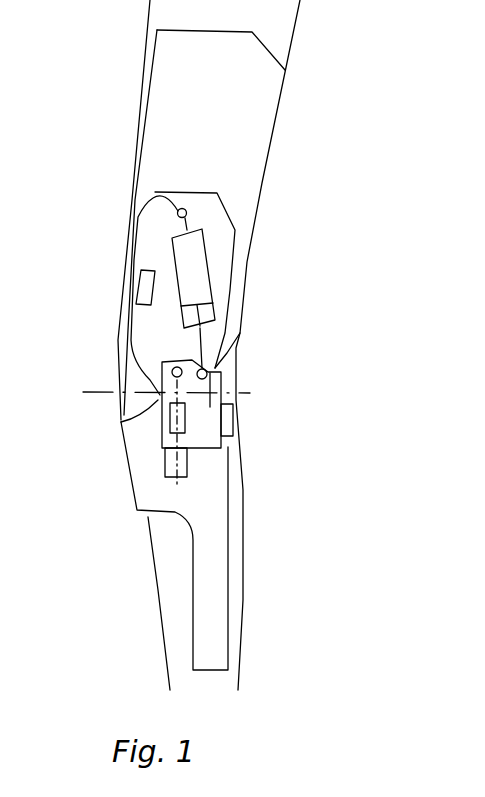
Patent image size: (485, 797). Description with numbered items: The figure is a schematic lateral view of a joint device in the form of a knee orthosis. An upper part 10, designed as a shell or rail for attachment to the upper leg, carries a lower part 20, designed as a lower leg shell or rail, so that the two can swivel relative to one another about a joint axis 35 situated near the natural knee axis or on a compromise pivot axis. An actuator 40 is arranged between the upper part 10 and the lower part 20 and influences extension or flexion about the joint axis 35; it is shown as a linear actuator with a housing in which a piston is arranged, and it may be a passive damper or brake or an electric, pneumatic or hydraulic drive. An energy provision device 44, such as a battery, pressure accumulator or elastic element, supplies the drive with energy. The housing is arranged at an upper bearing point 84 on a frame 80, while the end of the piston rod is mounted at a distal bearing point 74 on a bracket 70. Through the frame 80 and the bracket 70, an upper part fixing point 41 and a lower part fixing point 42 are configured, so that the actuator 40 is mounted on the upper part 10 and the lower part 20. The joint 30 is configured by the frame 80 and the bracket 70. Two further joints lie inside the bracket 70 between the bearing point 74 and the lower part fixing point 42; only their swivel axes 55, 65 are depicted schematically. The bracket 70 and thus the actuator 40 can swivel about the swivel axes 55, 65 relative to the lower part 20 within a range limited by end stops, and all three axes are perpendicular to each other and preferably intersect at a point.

The upper part 10 is at (255, 155).
The lower part 20 is at (215, 518).
The joint 30 is at (105, 403).
The joint axis 35 is at (172, 372).
The actuator 40 is at (215, 278).
The upper part fixing point 41 is at (242, 208).
The lower part fixing point 42 is at (222, 437).
The energy provision device 44 is at (138, 287).
The swivel axis 55 is at (262, 388).
The swivel axis 65 is at (163, 463).
The bracket 70 is at (208, 412).
The distal bearing point 74 is at (212, 371).
The frame 80 is at (148, 253).
The upper bearing point 84 is at (140, 207).